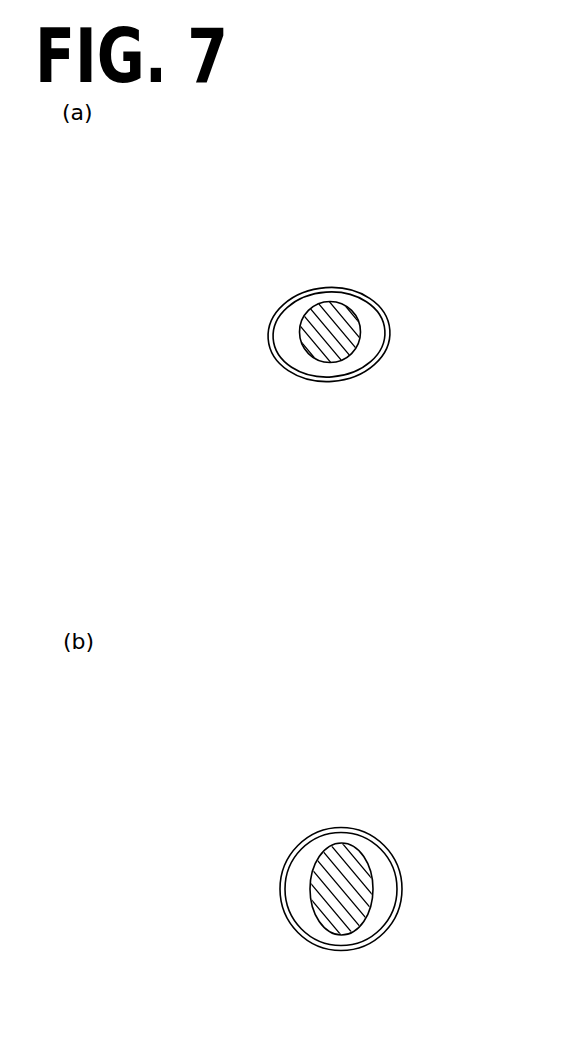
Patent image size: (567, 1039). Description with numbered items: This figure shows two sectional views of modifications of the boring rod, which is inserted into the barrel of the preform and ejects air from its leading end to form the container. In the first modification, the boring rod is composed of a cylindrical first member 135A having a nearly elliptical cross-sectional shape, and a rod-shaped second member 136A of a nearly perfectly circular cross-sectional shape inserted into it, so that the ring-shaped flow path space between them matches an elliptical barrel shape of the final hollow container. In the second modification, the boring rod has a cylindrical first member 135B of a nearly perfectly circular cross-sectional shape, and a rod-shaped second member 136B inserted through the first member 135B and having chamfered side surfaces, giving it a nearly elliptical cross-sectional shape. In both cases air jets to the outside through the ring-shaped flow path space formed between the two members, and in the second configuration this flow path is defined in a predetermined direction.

The cylindrical first member 135A is at (372, 306).
The cylindrical first member 135B is at (392, 862).
The rod-shaped second member 136A is at (303, 347).
The rod-shaped second member 136B is at (313, 900).